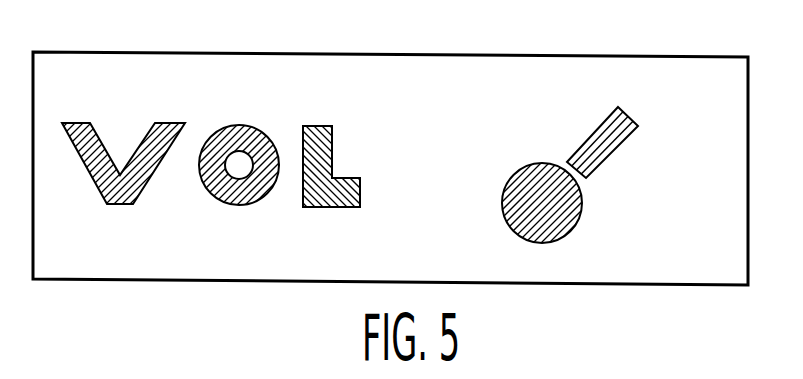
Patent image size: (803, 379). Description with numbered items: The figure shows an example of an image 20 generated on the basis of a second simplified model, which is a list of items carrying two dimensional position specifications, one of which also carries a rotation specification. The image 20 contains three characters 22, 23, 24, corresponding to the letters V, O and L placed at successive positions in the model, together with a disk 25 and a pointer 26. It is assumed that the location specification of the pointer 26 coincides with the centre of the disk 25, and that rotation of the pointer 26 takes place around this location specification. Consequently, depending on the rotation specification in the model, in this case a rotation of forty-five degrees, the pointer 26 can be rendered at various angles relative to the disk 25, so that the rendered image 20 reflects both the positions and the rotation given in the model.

The image 20 is at (162, 53).
The character 22 is at (80, 123).
The character 23 is at (240, 125).
The character 24 is at (316, 126).
The disk 25 is at (542, 163).
The pointer 26 is at (614, 108).